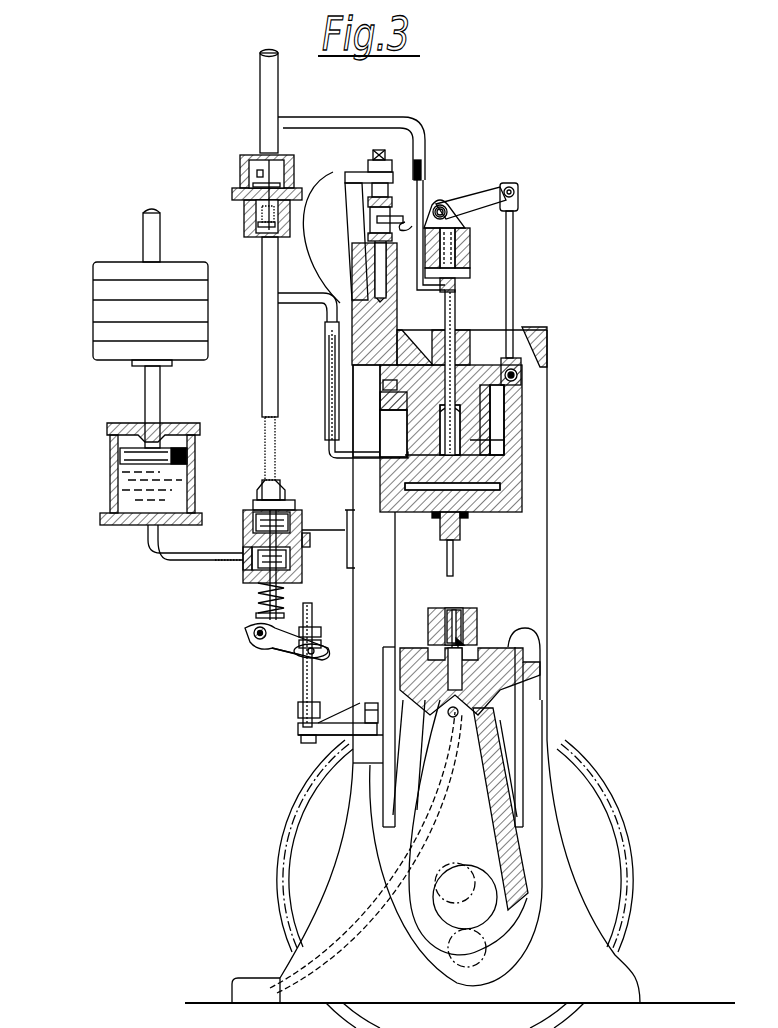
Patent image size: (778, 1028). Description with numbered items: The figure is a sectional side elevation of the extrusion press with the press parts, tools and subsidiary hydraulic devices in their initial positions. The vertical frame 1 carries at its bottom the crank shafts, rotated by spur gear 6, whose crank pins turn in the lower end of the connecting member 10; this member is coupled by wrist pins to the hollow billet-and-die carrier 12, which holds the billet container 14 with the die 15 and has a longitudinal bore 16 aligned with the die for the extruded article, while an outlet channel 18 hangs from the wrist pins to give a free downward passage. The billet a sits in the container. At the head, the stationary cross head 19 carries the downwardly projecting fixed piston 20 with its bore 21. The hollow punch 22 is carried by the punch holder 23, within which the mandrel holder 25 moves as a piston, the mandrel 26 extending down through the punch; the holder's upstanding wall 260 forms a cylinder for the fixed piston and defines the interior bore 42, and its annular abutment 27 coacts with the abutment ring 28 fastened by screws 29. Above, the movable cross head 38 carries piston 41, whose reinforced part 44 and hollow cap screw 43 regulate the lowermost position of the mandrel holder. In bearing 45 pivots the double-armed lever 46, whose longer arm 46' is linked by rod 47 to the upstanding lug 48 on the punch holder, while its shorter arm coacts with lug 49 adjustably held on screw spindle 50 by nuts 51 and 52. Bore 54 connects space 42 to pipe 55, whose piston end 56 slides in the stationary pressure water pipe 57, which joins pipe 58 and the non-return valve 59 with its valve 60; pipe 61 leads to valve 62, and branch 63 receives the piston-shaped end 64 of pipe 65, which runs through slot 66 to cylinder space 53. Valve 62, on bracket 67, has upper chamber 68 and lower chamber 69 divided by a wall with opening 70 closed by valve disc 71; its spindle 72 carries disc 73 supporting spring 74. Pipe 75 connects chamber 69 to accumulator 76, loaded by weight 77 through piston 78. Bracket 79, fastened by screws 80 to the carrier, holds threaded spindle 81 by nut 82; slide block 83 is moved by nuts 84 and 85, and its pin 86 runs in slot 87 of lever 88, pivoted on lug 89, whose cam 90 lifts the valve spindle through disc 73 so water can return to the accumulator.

The vertical frame 1 is at (547, 570).
The spur gear 6 is at (291, 845).
The connecting member 10 is at (513, 857).
The billet-and-die carrier 12 is at (503, 688).
The billet container 14 is at (430, 613).
The die 15 is at (465, 643).
The longitudinal bore 16 is at (455, 670).
The outlet channel 18 is at (243, 990).
The stationary cross head 19 is at (547, 347).
The fixed piston member 20 is at (523, 408).
The bore 21 is at (407, 427).
The hollow punch 22 is at (459, 525).
The punch holder 23 is at (523, 505).
The mandrel holder 25 is at (523, 485).
The mandrel 26 is at (453, 557).
The annular abutment 27 is at (523, 442).
The abutment ring 28 is at (383, 402).
The screws 29 is at (386, 389).
The movable cross head 38 is at (470, 253).
The piston 41 is at (455, 287).
The bore of interior cylinder 42 is at (523, 473).
The hollow cap screw 43 is at (470, 343).
The reinforced part of piston 44 is at (523, 419).
The horizontal bearing 45 is at (462, 221).
The double-armed lever 46 is at (480, 178).
The longer arm of lever 46' is at (535, 178).
The rod 47 is at (514, 293).
The upstanding lug 48 is at (522, 388).
The lug 49 is at (350, 222).
The screw spindle 50 is at (376, 262).
The nut 51 is at (370, 237).
The nut 52 is at (372, 200).
The cylinder space 53 is at (523, 453).
The bore 54 is at (446, 310).
The pipe 55 is at (418, 272).
The piston 56 is at (425, 177).
The stationary pressure water pipe 57 is at (330, 124).
The pipe 58 is at (263, 76).
The non-return valve 59 is at (240, 164).
The valve 60 is at (257, 197).
The pipe 61 is at (267, 253).
The valve 62 is at (250, 507).
The branch 63 is at (305, 298).
The piston-shaped end 64 is at (325, 360).
The pipe 65 is at (330, 452).
The slot 66 is at (387, 443).
The bracket 67 is at (348, 522).
The upper chamber 68 is at (297, 512).
The lower chamber 69 is at (290, 569).
The opening 70 is at (290, 547).
The valve disc 71 is at (245, 518).
The valve spindle 72 is at (262, 565).
The disc 73 is at (253, 620).
The spring 74 is at (282, 590).
The pipe 75 is at (155, 557).
The accumulator 76 is at (133, 525).
The weight 77 is at (98, 317).
The piston 78 is at (122, 455).
The bracket 79 is at (322, 738).
The screws 80 is at (368, 703).
The threaded spindle 81 is at (314, 697).
The nut 82 is at (300, 740).
The slide block 83 is at (300, 652).
The nuts 84 is at (298, 708).
The nuts 85 is at (316, 630).
The pin 86 is at (318, 644).
The slot 87 is at (323, 655).
The lever 88 is at (272, 652).
The lug 89 is at (257, 594).
The cam 90 is at (250, 638).
The upstanding cylindrical wall 260 is at (523, 433).
The billet a is at (455, 643).